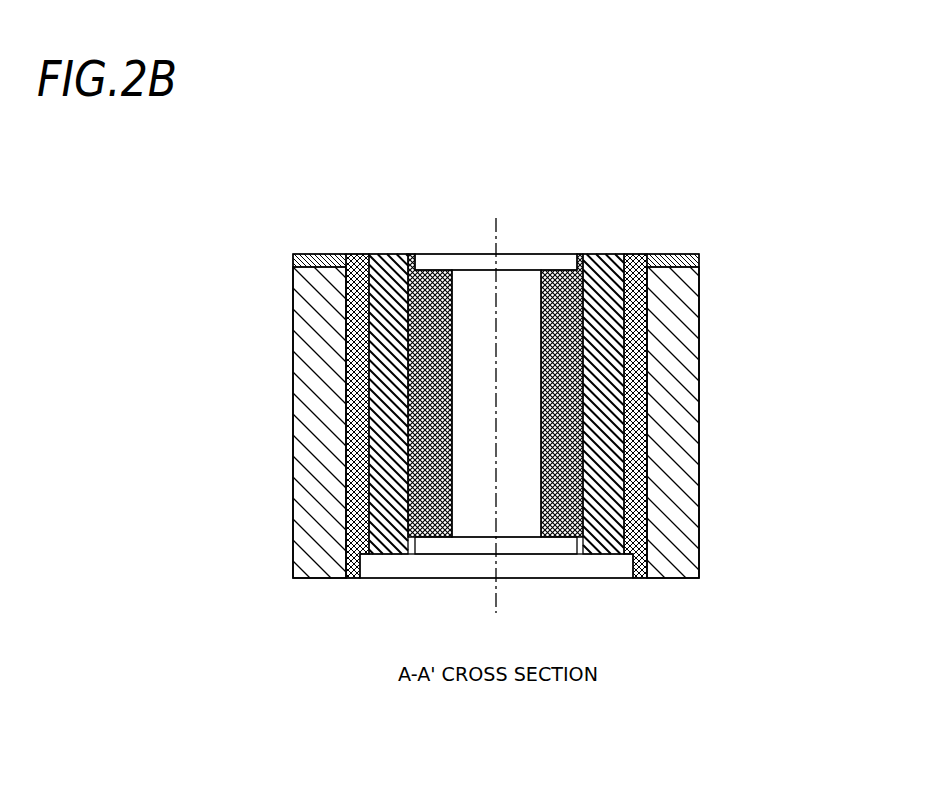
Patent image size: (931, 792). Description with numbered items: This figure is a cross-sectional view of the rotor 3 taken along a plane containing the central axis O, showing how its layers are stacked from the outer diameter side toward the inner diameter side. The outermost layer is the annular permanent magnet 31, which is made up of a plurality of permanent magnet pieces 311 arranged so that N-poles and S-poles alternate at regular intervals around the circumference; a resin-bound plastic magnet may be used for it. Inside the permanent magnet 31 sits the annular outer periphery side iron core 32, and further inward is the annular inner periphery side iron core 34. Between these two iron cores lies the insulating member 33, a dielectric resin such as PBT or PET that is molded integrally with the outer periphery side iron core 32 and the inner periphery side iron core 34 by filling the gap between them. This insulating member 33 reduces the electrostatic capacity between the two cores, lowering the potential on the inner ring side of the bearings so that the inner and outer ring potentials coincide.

The rotor 3 is at (558, 250).
The permanent magnet 31 is at (293, 382).
The permanent magnet pieces 311 is at (318, 343).
The outer periphery side iron core 32 is at (346, 308).
The insulating member 33 is at (375, 255).
The inner periphery side iron core 34 is at (418, 253).
The central axis O is at (492, 237).